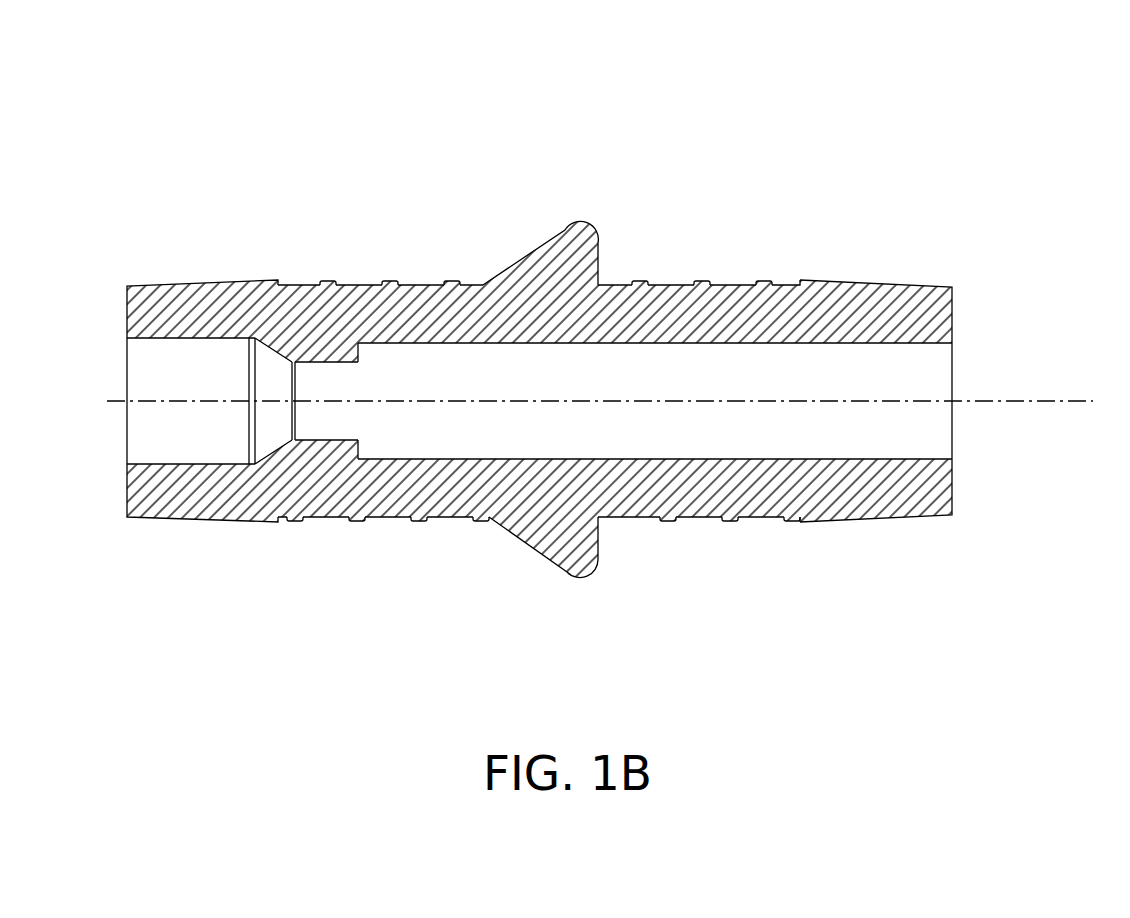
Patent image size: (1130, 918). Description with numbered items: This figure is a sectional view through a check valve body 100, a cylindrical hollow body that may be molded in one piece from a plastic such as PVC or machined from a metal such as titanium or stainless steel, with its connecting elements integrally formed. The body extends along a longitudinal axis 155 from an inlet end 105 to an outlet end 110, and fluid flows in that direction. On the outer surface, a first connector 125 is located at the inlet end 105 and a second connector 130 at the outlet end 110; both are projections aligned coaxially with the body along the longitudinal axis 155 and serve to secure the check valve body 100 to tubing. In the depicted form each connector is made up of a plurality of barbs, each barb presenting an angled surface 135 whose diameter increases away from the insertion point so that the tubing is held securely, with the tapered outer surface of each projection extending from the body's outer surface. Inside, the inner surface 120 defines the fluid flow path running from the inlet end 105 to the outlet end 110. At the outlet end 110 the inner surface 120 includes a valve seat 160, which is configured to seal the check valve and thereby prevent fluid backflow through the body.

The check valve body 100 is at (86, 157).
The inlet end 105 is at (860, 588).
The outlet end 110 is at (200, 556).
The inner surface 120 is at (448, 364).
The first connector 125 is at (940, 247).
The second connector 130 is at (211, 231).
The angled surface 135 is at (188, 282).
The longitudinal axis 155 is at (1047, 400).
The valve seat 160 is at (267, 351).